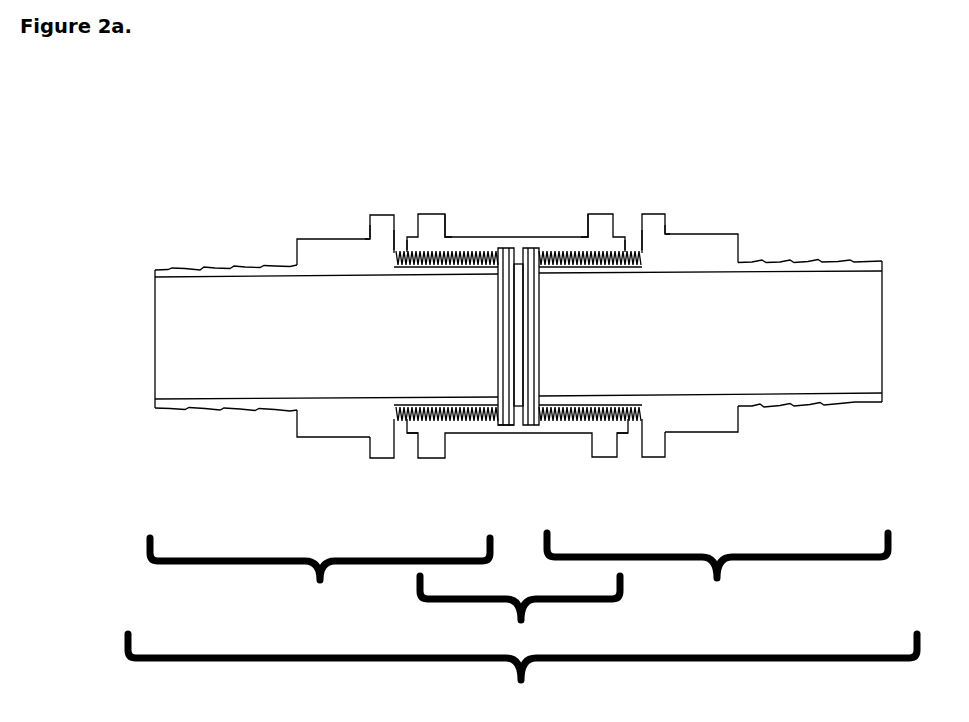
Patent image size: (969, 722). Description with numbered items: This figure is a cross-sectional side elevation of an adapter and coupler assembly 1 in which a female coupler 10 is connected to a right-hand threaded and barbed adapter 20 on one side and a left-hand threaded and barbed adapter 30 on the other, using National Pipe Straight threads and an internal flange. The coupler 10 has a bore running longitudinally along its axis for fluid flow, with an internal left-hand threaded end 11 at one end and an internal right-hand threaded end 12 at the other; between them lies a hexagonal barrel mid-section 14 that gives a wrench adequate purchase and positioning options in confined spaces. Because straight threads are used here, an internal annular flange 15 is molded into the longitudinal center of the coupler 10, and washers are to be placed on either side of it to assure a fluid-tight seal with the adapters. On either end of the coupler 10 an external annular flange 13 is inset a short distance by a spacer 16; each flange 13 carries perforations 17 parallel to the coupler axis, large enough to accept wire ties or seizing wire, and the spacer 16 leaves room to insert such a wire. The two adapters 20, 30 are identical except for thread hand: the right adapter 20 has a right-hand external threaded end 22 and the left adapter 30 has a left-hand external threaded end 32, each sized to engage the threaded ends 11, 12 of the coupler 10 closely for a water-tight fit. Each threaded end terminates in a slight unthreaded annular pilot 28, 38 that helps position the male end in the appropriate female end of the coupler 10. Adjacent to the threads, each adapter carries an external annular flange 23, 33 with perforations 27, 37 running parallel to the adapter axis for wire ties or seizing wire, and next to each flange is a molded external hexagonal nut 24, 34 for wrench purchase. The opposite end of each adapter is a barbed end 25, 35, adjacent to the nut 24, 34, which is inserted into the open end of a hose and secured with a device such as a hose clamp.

The adapter and coupler assembly 1 is at (522, 674).
The female coupler 10 is at (520, 615).
The internal left-hand threaded end 11 is at (544, 262).
The internal right-hand threaded end 12 is at (503, 425).
The external annular flange 13 is at (430, 212).
The hexagonal barrel mid-section 14 is at (518, 262).
The internal annular flange 15 is at (511, 262).
The spacer 16 is at (413, 436).
The perforations 17 is at (446, 219).
The right-hand threaded and barbed adapter 20 is at (320, 577).
The right-hand external threaded end 22 is at (402, 256).
The external annular flange 23 is at (382, 212).
The external hexagonal nut 24 is at (332, 237).
The barbed end 25 is at (237, 266).
The perforations 27 is at (368, 224).
The pilot 28 is at (492, 406).
The left-hand threaded and barbed adapter 30 is at (717, 572).
The left-hand external threaded end 32 is at (632, 258).
The external annular flange 33 is at (653, 212).
The external hexagonal nut 34 is at (700, 233).
The barbed end 35 is at (800, 260).
The perforations 37 is at (667, 219).
The pilot 38 is at (545, 413).